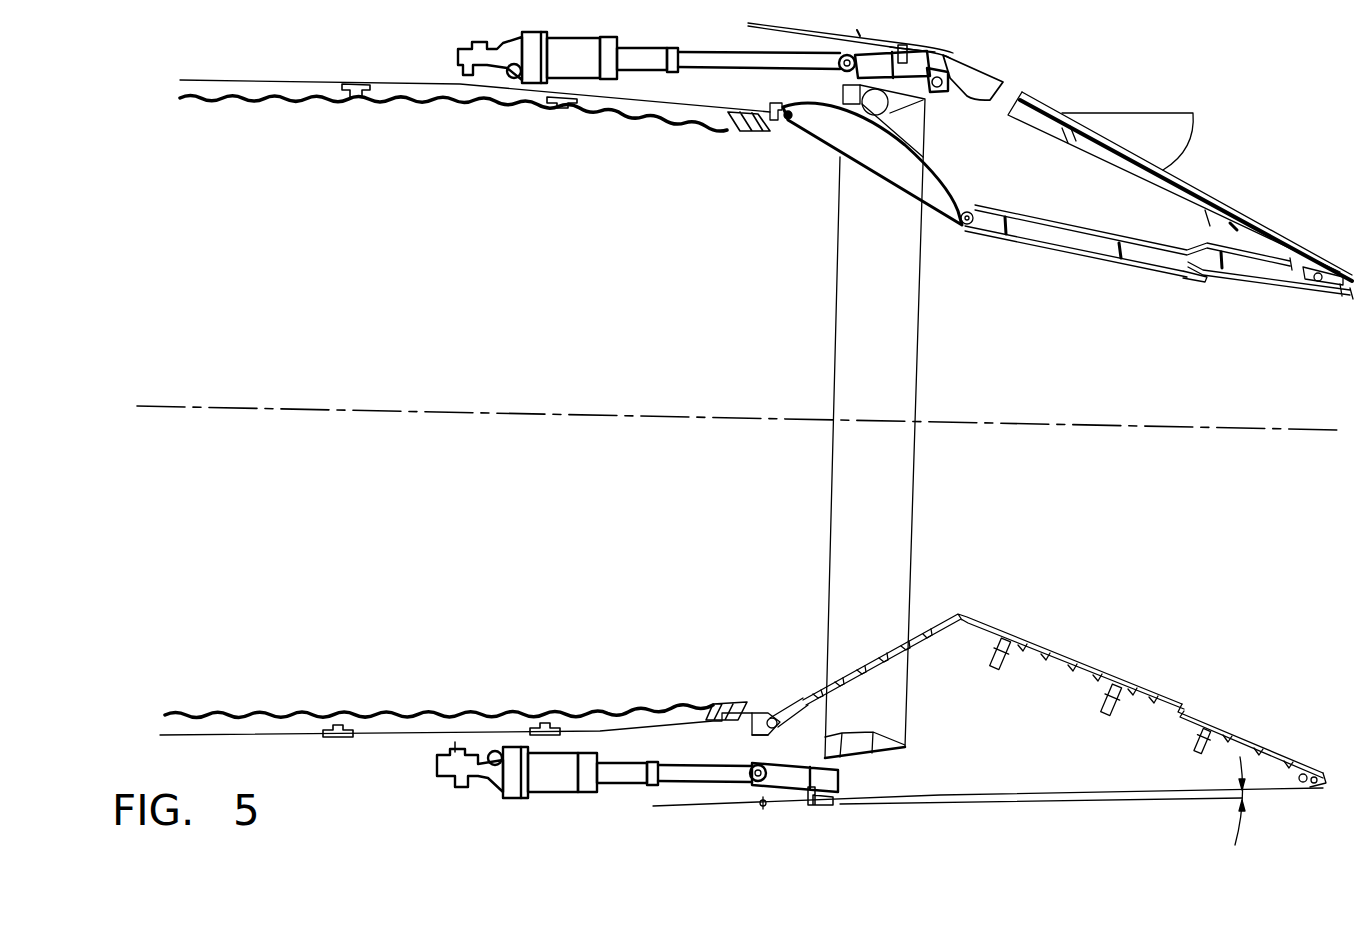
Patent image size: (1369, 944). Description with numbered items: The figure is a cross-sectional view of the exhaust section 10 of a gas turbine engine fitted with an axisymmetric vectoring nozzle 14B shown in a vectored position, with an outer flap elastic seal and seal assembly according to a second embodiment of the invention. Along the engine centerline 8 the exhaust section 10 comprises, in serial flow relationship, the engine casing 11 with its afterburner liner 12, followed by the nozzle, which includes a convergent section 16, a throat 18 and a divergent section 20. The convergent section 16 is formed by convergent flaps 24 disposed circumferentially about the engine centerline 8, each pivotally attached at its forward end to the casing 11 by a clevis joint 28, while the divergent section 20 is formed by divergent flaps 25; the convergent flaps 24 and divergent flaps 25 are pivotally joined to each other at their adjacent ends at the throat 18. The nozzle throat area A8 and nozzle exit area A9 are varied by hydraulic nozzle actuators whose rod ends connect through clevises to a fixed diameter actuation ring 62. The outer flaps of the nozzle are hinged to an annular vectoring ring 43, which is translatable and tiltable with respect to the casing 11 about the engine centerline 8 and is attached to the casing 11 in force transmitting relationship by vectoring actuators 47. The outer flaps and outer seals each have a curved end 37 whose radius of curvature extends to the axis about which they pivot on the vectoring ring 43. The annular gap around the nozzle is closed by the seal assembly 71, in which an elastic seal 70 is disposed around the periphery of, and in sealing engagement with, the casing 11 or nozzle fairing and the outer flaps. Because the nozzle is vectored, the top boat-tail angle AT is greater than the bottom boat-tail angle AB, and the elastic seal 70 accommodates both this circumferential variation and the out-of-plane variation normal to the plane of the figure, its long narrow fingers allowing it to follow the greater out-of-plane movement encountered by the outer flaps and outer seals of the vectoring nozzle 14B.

The engine centerline 8 is at (540, 414).
The exhaust section 10 is at (872, 47).
The engine casing 11 is at (392, 82).
The afterburner liner 12 is at (553, 112).
The axisymmetric vectoring nozzle 14B is at (1035, 69).
The convergent section 16 is at (788, 290).
The throat 18 is at (978, 276).
The divergent section 20 is at (1157, 316).
The convergent flap 24 is at (830, 148).
The divergent flap 25 is at (1100, 258).
The clevis joint 28 is at (787, 125).
The curved end 37 is at (945, 55).
The annular vectoring ring 43 is at (890, 47).
The vectoring actuator 47 is at (575, 38).
The actuation ring 62 is at (915, 472).
The elastic seal 70 is at (800, 805).
The seal assembly 71 is at (950, 29).
The top boat-tail angle AT is at (1177, 147).
The bottom boat-tail angle AB is at (1242, 830).
The nozzle throat area A8 is at (995, 522).
The nozzle exit area A9 is at (1318, 522).